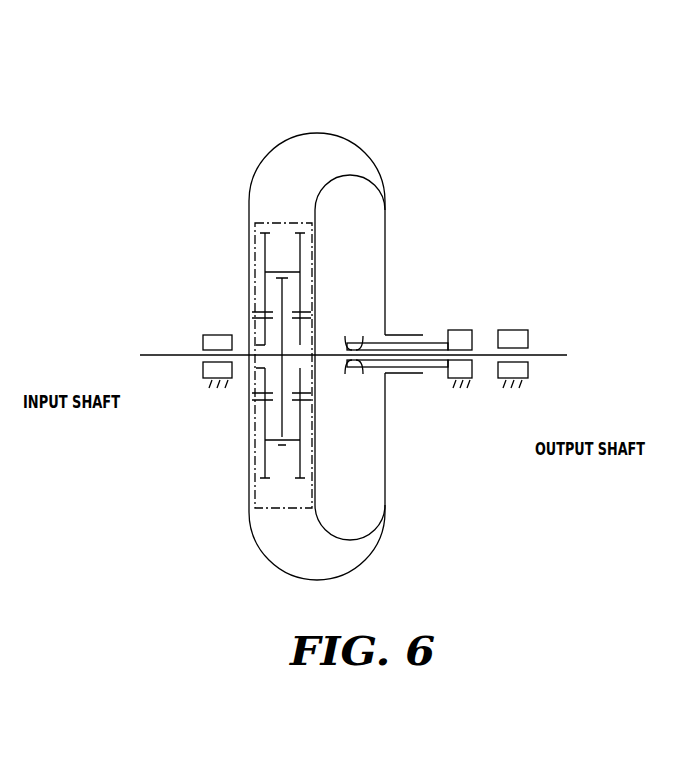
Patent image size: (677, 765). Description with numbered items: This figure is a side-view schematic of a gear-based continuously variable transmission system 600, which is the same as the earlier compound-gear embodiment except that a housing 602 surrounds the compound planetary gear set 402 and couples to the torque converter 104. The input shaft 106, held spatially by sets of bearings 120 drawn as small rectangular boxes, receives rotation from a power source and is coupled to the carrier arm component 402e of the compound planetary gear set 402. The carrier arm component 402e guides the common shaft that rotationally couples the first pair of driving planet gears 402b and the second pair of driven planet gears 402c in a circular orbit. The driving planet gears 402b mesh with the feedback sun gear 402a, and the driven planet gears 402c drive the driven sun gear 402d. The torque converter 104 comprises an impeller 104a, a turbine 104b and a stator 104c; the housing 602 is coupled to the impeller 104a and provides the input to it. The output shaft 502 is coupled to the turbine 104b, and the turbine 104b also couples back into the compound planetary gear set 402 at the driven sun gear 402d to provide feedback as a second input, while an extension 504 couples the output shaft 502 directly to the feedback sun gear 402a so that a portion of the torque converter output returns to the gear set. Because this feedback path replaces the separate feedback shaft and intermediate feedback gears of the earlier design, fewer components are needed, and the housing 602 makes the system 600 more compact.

The continuously variable transmission system 600 is at (519, 114).
The torque converter 104 is at (343, 540).
The impeller 104a is at (374, 188).
The turbine 104b is at (333, 187).
The stator 104c is at (467, 331).
The housing 602 is at (377, 550).
The compound planetary gear set 402 is at (266, 214).
The feedback sun gear 402a is at (311, 312).
The driving planet gears 402b is at (311, 318).
The driven planet gears 402c is at (265, 312).
The driven sun gear 402d is at (262, 318).
The carrier arm component 402e is at (281, 266).
The bearings 120 is at (203, 339).
The input shaft 106 is at (178, 357).
The extension 504 is at (333, 360).
The output shaft 502 is at (548, 357).